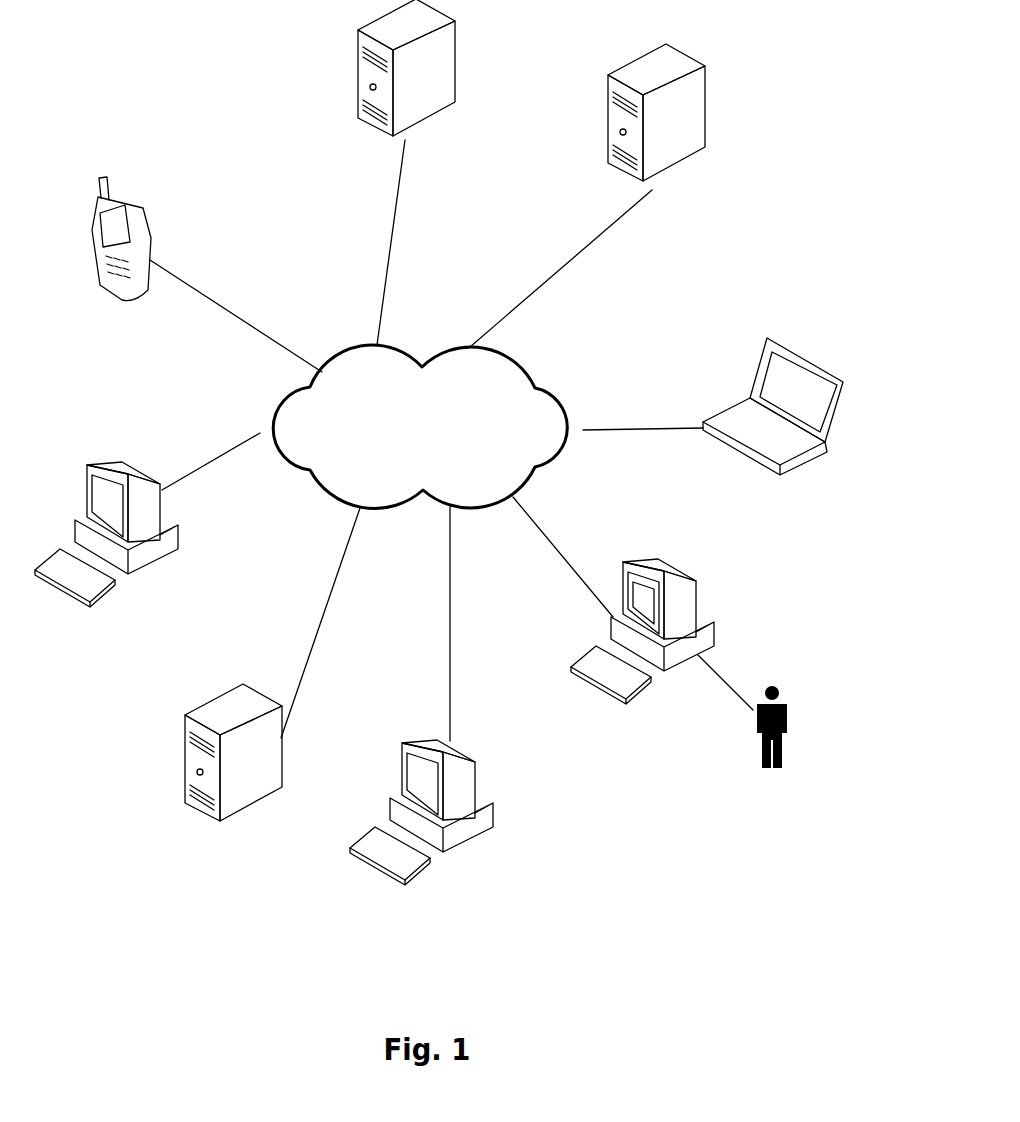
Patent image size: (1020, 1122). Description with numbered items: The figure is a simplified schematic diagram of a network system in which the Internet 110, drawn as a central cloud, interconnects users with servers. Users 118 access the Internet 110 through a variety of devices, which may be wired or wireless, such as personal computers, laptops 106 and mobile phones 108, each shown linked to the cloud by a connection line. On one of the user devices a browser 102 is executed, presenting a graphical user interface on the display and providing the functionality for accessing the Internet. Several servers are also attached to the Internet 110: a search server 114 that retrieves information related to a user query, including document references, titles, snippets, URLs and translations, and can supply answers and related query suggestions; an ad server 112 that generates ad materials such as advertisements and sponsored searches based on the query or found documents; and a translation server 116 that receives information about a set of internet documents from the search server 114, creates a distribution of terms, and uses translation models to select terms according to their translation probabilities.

The browser 102 is at (653, 605).
The laptop 106 is at (782, 340).
The mobile phone 108 is at (147, 222).
The Internet 110 is at (537, 387).
The ad server 112 is at (183, 770).
The search server 114 is at (358, 80).
The translation server 116 is at (705, 128).
The user 118 is at (767, 765).